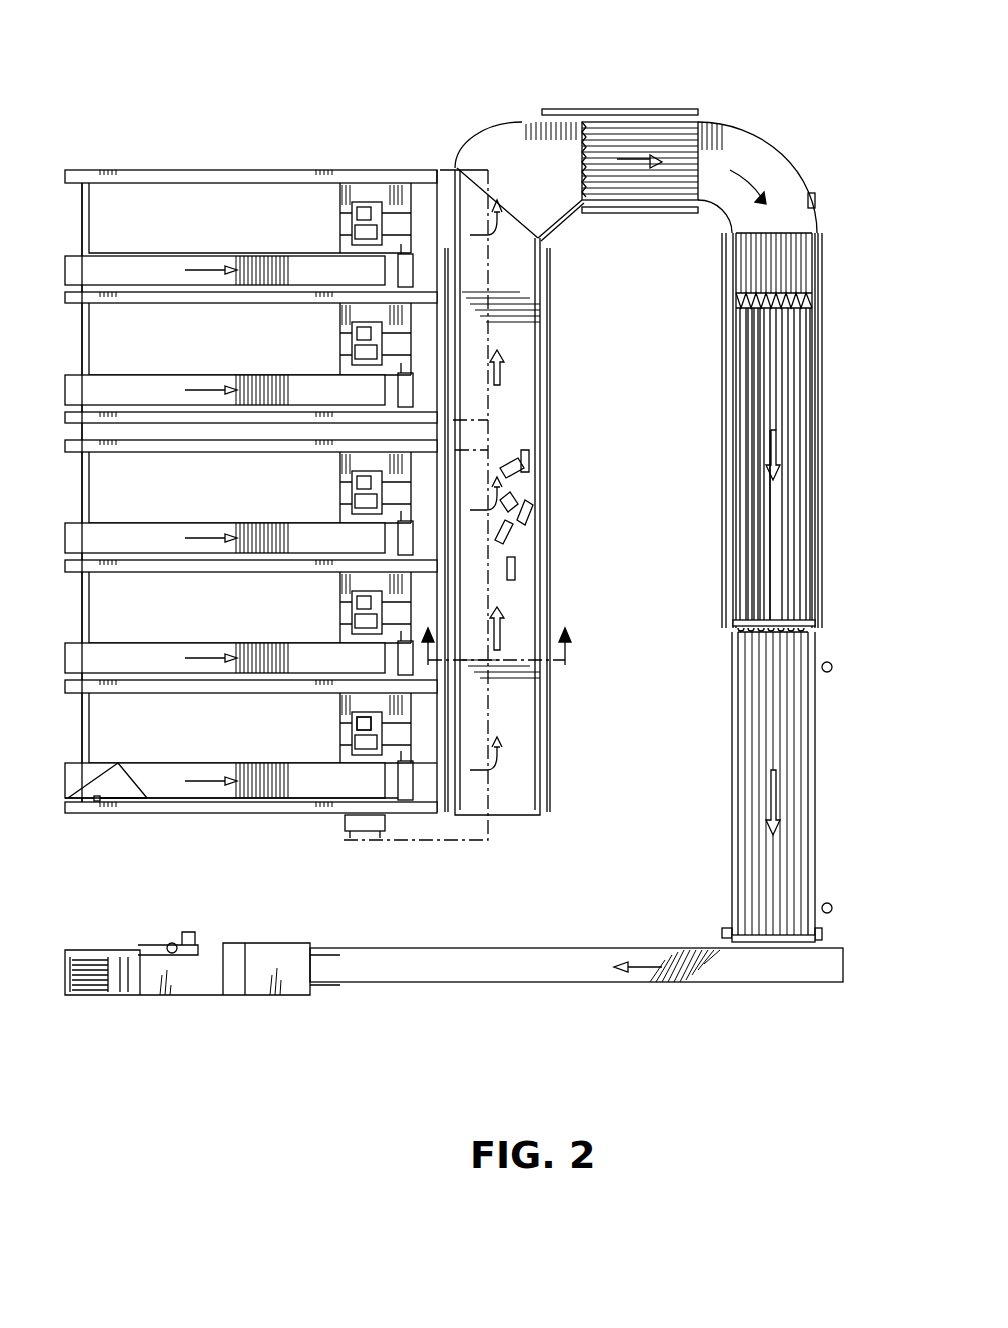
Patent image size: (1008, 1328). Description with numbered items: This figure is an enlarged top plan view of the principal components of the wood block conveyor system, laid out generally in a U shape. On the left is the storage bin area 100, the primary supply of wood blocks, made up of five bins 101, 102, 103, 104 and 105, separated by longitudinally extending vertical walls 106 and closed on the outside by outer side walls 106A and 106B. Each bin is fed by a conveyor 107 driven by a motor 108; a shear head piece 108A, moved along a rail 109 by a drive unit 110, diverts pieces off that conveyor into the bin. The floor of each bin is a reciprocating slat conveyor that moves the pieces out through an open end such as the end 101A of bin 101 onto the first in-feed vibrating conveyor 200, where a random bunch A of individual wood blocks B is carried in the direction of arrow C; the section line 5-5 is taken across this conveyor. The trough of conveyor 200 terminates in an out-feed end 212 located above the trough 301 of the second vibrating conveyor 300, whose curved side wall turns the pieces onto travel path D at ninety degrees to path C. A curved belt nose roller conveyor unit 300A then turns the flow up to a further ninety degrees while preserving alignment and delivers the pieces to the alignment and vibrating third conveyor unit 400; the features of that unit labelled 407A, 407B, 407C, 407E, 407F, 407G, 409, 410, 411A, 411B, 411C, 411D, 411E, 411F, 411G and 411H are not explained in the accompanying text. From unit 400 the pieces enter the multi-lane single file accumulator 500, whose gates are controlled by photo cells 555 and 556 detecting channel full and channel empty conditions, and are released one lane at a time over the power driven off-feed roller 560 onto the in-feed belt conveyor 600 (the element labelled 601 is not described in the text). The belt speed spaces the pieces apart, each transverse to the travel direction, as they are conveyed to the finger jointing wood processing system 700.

The storage bin area 100 is at (225, 825).
The bin 101 is at (239, 746).
The bin 102 is at (251, 632).
The bin 103 is at (251, 512).
The bin 104 is at (251, 377).
The bin 105 is at (251, 243).
The open end of bin 101A is at (433, 768).
The longitudinally extending vertical wall 106 is at (290, 300).
The outer side wall 106A is at (420, 808).
The outer side wall 106B is at (200, 170).
The conveyor 107 is at (338, 815).
The motor 108 is at (352, 742).
The shear head piece 108A is at (128, 790).
The rail 109 is at (245, 800).
The drive unit 110 is at (372, 832).
The first in-feed vibrating type conveyor 200 is at (552, 306).
The out-feed end 212 is at (520, 200).
The 90 degree vibrating type second conveyor 300 is at (628, 90).
The trough 301 is at (605, 125).
The conveyor unit 300A is at (752, 150).
The alignment and vibrating type third conveyor unit 400 is at (713, 516).
The tube 407A is at (805, 340).
The tube 407B is at (795, 372).
The tube 407C is at (785, 402).
The tube 407E is at (762, 573).
The tube 407F is at (757, 590).
The tube 407G is at (748, 605).
The plate 409 is at (815, 615).
The central pipe 410 is at (722, 458).
The tube 411A is at (785, 582).
The tube 411B is at (790, 546).
The tube 411C is at (795, 512).
The tube 411D is at (798, 478).
The tube 411E is at (770, 386).
The tube 411F is at (760, 352).
The tube 411G is at (750, 325).
The tube bundle header 411H is at (740, 318).
The multi-lane article single file belt type conveyor 500 is at (818, 760).
The photo cells 555 is at (831, 672).
The photo cells 556 is at (831, 904).
The off-feed power driven roller 560 is at (775, 942).
The in-feed conveyor 600 is at (522, 1000).
The conveyor belt 601 is at (602, 977).
The wood processing system 700 is at (200, 1012).
The random bunch A is at (540, 475).
The wood blocks B is at (517, 567).
The direction of travel C is at (497, 372).
The travel path D is at (632, 158).
The section line 5- 5 is at (496, 631).